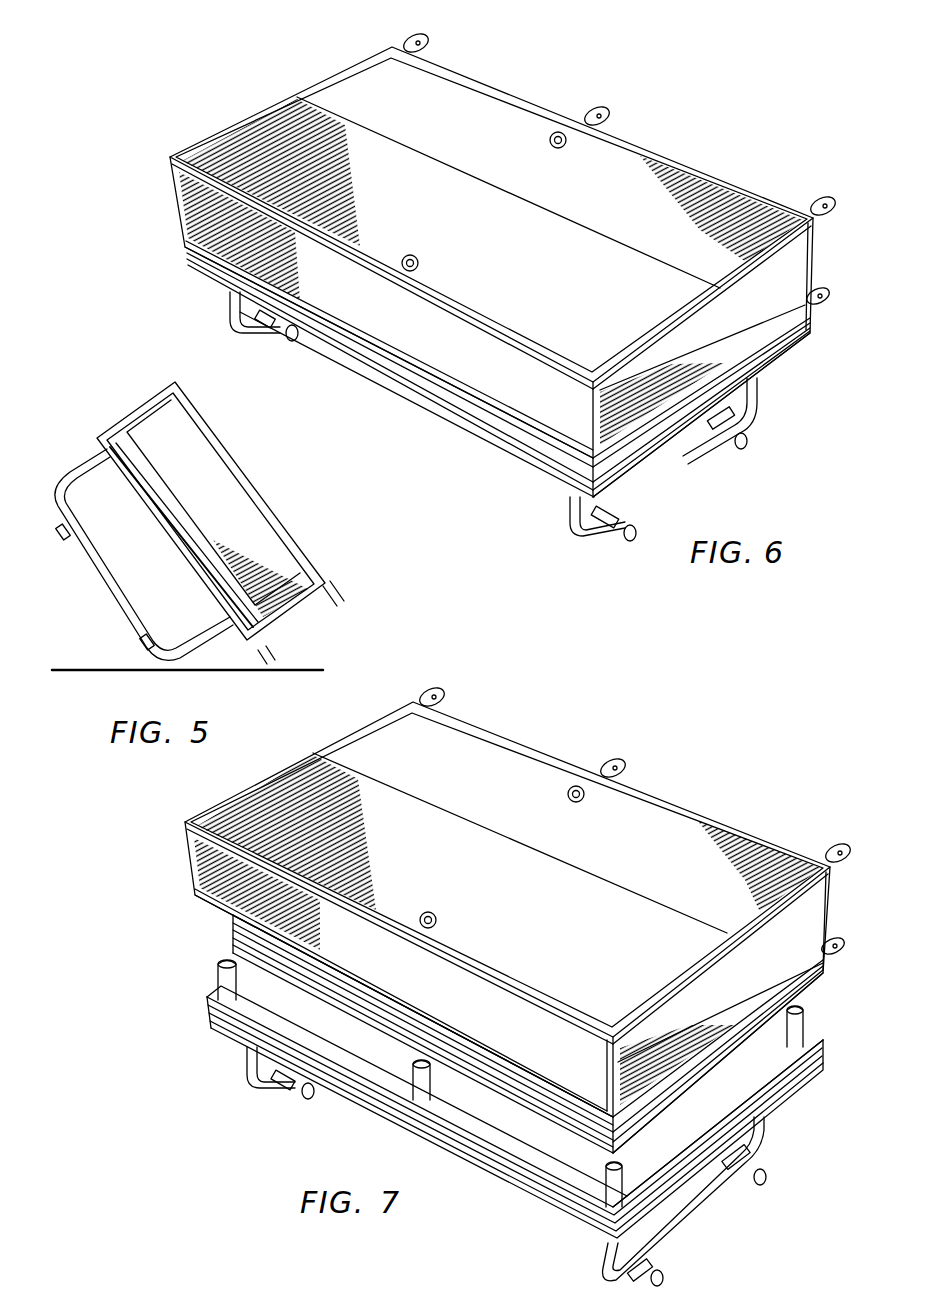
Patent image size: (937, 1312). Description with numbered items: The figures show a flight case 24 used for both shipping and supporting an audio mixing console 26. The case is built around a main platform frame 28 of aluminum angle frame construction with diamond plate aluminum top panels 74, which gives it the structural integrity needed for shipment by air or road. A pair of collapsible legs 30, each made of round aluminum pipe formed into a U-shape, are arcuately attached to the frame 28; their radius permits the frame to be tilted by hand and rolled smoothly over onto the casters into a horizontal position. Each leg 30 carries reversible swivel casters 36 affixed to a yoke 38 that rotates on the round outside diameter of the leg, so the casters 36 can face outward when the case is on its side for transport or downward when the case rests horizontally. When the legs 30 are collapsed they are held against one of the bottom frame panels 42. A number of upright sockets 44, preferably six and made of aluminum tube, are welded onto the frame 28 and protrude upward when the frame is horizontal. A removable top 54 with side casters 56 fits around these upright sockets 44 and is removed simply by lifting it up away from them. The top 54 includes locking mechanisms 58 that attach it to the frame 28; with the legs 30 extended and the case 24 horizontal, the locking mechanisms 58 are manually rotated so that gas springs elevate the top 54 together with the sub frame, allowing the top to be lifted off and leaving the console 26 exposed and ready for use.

In FIG. 6, the flight case 24 is at (696, 142).
In FIG. 7, the flight case 24 is at (507, 927).
In FIG. 7, the audio mixing console 26 is at (258, 1063).
In FIG. 6, the main platform frame 28 is at (480, 435).
In FIG. 7, the main platform frame 28 is at (540, 1207).
In FIG. 6, the collapsible legs 30 is at (232, 318).
In FIG. 5, the collapsible legs 30 is at (120, 608).
In FIG. 7, the collapsible legs 30 is at (250, 1078).
In FIG. 6, the reversible swivel casters 36 is at (287, 340).
In FIG. 5, the reversible swivel casters 36 is at (62, 545).
In FIG. 7, the reversible swivel casters 36 is at (311, 1098).
In FIG. 6, the yoke 38 is at (585, 518).
In FIG. 7, the yoke 38 is at (763, 1162).
In FIG. 6, the bottom frame panels 42 is at (537, 462).
In FIG. 7, the bottom frame panels 42 is at (483, 1160).
In FIG. 7, the upright sockets 44 is at (214, 972).
In FIG. 6, the removable top 54 is at (250, 115).
In FIG. 7, the removable top 54 is at (520, 740).
In FIG. 6, the side casters 56 is at (425, 45).
In FIG. 5, the side casters 56 is at (338, 603).
In FIG. 7, the side casters 56 is at (445, 697).
In FIG. 6, the locking mechanisms 58 is at (550, 136).
In FIG. 7, the locking mechanisms 58 is at (577, 785).
In FIG. 6, the diamond plate aluminum top panels 74 is at (172, 212).
In FIG. 5, the diamond plate aluminum top panels 74 is at (170, 425).
In FIG. 7, the diamond plate aluminum top panels 74 is at (207, 808).